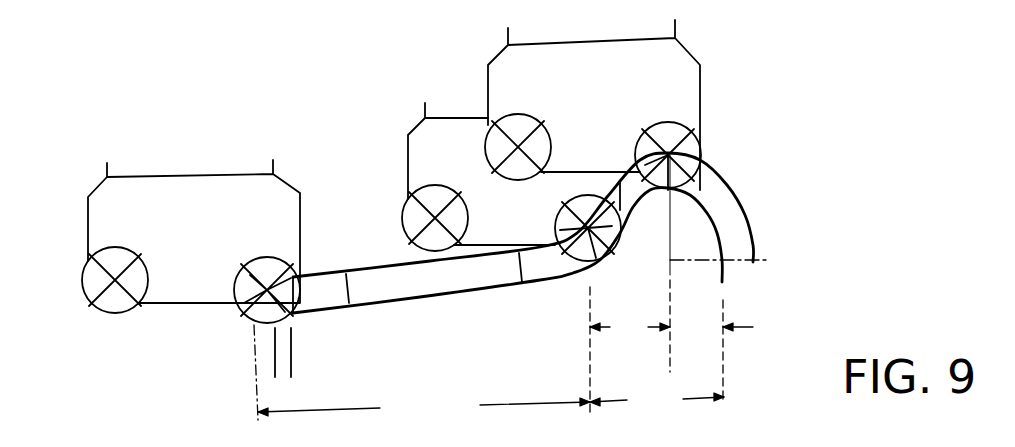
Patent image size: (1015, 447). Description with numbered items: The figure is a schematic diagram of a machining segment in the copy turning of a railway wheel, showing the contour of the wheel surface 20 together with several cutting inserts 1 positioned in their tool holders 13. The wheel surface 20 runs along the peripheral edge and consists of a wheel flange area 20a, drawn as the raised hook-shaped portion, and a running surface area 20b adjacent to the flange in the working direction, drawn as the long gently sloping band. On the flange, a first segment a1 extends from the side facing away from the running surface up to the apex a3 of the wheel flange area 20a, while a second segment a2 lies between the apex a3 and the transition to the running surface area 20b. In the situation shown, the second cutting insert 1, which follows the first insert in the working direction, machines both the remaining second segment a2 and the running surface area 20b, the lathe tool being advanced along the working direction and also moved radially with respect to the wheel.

The cutting insert 1 is at (117, 303).
The tool holder 13 is at (166, 185).
The wheel surface 20 is at (737, 195).
The wheel flange area 20a is at (657, 352).
The running surface area 20b is at (422, 373).
The first segment a1 is at (722, 329).
The second segment a2 is at (630, 263).
The apex a3 is at (667, 205).